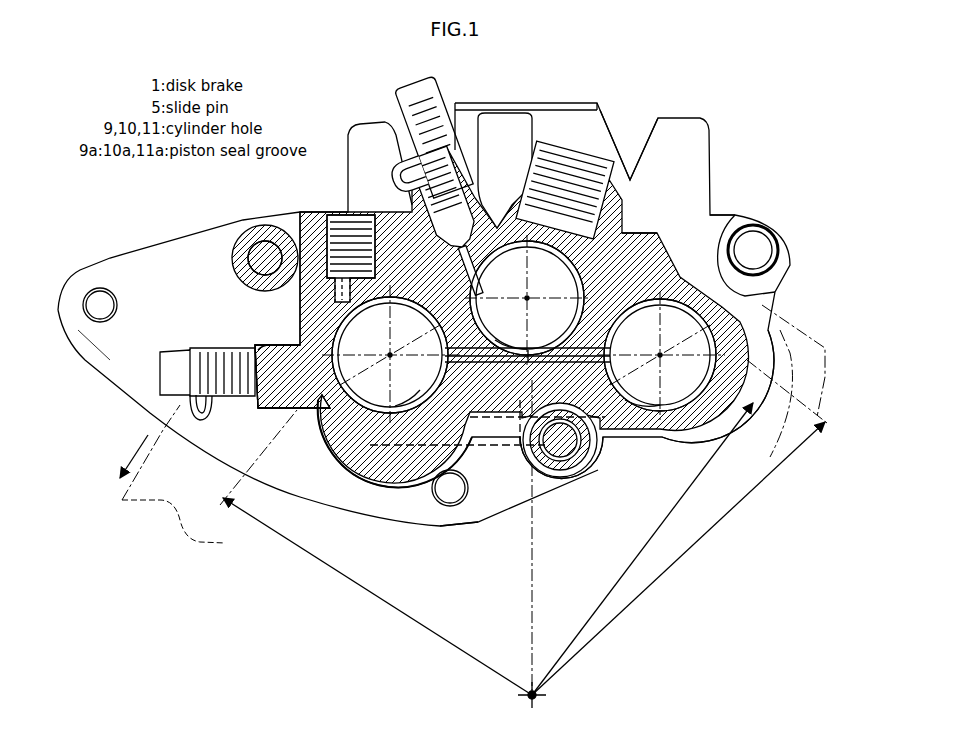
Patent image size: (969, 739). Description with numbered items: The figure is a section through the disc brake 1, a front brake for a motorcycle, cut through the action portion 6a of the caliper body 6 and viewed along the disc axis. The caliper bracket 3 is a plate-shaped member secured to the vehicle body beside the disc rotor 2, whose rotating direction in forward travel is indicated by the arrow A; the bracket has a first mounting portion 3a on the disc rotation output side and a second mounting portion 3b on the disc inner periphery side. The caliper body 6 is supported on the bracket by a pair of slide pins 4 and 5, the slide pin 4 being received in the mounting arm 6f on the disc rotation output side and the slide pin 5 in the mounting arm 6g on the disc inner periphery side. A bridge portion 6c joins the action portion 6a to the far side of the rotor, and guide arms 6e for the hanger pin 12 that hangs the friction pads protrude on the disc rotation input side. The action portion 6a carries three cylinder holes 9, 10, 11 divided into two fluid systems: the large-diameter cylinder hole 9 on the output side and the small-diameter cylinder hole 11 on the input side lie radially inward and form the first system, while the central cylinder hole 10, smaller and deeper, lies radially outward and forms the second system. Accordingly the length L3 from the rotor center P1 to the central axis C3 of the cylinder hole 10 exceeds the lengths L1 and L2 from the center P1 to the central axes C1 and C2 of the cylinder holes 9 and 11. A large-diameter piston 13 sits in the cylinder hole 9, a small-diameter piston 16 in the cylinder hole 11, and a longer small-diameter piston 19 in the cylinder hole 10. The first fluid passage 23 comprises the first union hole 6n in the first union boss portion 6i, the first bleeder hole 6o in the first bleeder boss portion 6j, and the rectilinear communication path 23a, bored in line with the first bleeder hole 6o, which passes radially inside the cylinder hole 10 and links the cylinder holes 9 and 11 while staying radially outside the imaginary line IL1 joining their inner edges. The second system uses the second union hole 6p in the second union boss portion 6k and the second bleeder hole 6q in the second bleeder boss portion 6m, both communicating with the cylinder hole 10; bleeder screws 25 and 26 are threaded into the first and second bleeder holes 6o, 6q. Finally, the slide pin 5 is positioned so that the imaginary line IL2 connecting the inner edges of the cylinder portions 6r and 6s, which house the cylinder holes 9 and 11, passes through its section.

The disc brake 1 is at (477, 68).
The disc rotor 2 is at (793, 322).
The caliper bracket 3 is at (430, 528).
The first mounting portion 3a is at (133, 264).
The second mounting portion 3b is at (478, 522).
The slide pin 4 is at (264, 238).
The slide pin 5 is at (594, 458).
The caliper body 6 is at (700, 116).
The action portion 6a is at (633, 232).
The bridge portion 6c is at (512, 118).
The guide arm 6e is at (726, 218).
The mounting arm 6f is at (238, 260).
The mounting arm 6g is at (578, 472).
The first union boss portion 6i is at (324, 222).
The first bleeder boss portion 6j is at (255, 406).
The second union boss portion 6k is at (593, 160).
The second bleeder boss portion 6m is at (502, 170).
The first union hole 6n is at (382, 268).
The first bleeder hole 6o is at (248, 350).
The second union hole 6p is at (585, 203).
The second bleeder hole 6q is at (410, 195).
The cylinder portion 6r is at (338, 432).
The cylinder portion 6s is at (657, 437).
The cylinder hole 9 is at (370, 432).
The cylinder hole 10 is at (584, 272).
The cylinder hole 11 is at (698, 428).
The hanger pin 12 is at (765, 248).
The piston 13 is at (405, 398).
The piston 16 is at (636, 398).
The piston 19 is at (505, 335).
The first fluid passage 23 is at (474, 343).
The communication path 23a is at (540, 344).
The bleeder screw 25 is at (202, 350).
The bleeder screw 26 is at (428, 112).
The central axis C1 is at (390, 355).
The central axis C2 is at (660, 355).
The central axis C3 is at (527, 298).
The center P1 is at (540, 700).
The length L1 is at (377, 596).
The length L2 is at (642, 549).
The length L3 is at (678, 558).
The imaginary line IL1 is at (500, 432).
The imaginary line IL2 is at (512, 460).
The arrow A is at (199, 474).